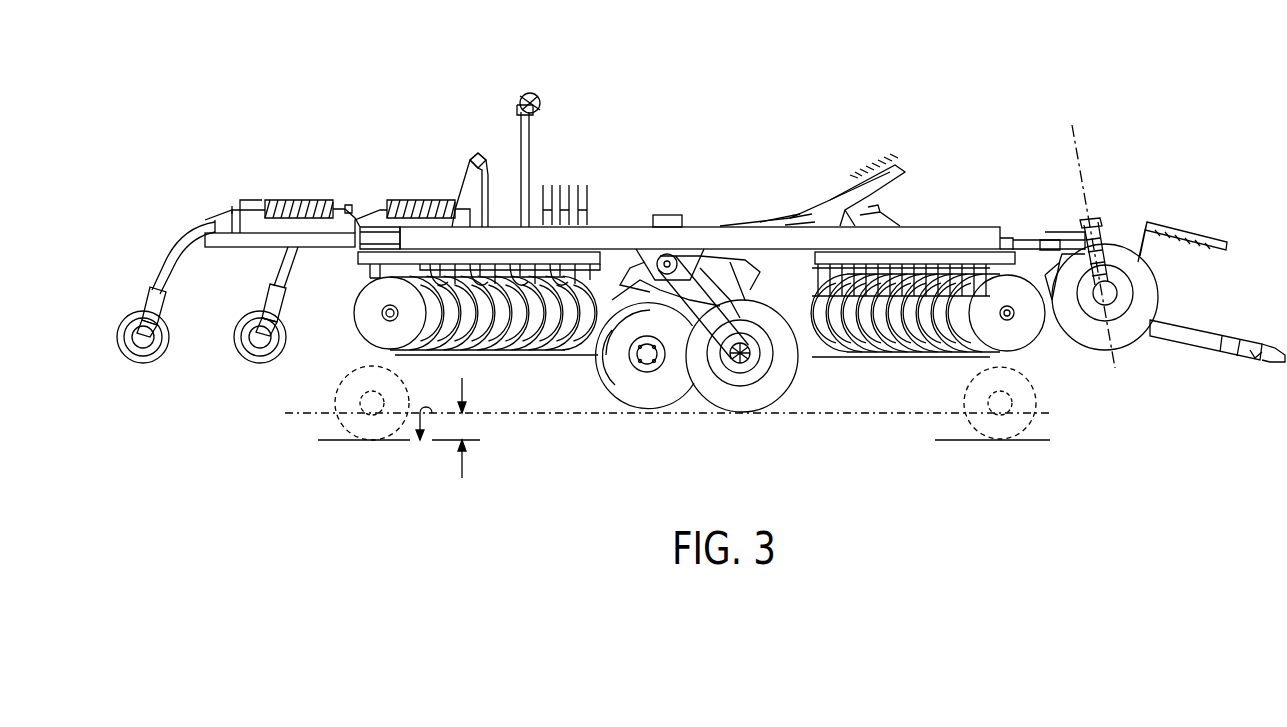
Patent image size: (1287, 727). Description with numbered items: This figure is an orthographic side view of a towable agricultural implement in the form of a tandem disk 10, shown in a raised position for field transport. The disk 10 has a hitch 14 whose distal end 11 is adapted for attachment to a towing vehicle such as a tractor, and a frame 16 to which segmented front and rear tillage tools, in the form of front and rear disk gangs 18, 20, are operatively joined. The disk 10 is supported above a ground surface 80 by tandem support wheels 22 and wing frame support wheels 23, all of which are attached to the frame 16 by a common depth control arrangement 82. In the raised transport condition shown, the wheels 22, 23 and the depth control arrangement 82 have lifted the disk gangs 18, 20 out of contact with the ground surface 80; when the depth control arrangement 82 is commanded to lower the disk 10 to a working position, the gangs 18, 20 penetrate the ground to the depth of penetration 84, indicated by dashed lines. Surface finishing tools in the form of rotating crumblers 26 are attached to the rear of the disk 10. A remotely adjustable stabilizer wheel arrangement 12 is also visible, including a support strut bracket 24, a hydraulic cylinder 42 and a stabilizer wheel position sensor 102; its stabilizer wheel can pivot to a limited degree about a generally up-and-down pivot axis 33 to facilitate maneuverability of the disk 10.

The tandem disk 10 is at (582, 78).
The distal end 11 is at (1282, 377).
The remotely adjustable stabilizer wheel arrangement 12 is at (1100, 358).
The hitch 14 is at (1182, 360).
The frame 16 is at (705, 235).
The front disk gang 18 is at (885, 353).
The rear disk gang 20 is at (483, 353).
The tandem support wheel 22 is at (598, 370).
The wing frame support wheel 23 is at (780, 378).
The support strut bracket 24 is at (1045, 245).
The rotating crumbler 26 is at (124, 220).
The pivot axis 33 is at (1076, 140).
The hydraulic cylinder 42 is at (1140, 222).
The ground surface 80 is at (423, 444).
The depth control arrangement 82 is at (746, 272).
The depth of penetration 84 is at (466, 466).
The stabilizer wheel position sensor 102 is at (1110, 215).